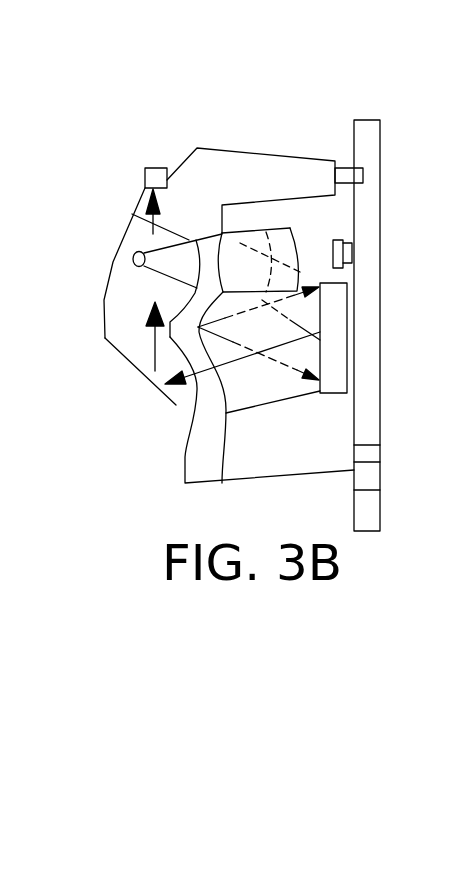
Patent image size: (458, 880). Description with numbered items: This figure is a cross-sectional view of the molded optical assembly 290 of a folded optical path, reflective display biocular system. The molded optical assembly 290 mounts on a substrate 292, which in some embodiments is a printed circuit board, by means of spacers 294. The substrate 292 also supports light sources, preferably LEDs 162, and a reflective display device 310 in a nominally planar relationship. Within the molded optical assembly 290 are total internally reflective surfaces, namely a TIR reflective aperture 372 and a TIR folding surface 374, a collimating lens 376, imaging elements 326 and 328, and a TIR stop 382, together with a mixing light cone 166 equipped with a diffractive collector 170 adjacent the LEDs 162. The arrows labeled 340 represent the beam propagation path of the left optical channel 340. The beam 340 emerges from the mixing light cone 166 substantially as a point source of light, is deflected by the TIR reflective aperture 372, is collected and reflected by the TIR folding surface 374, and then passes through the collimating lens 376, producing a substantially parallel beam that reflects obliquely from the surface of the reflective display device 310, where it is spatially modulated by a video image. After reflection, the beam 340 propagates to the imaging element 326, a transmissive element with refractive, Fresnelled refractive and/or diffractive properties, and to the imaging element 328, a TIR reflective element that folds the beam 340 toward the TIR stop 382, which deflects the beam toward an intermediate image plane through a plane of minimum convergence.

The molded optical assembly 290 is at (310, 96).
The substrate 292 is at (382, 407).
The spacers 294 is at (307, 156).
The TIR stop 382 is at (156, 168).
The left optical channel 340 is at (148, 206).
The mixing light cone 166 is at (243, 233).
The diffractive collector 170 is at (293, 224).
The TIR folding surface 374 is at (133, 233).
The TIR reflective aperture 372 is at (133, 258).
The collimating lens 376 is at (210, 292).
The LEDs 162 is at (347, 240).
The reflective display device 310 is at (348, 352).
The imaging element 326 is at (175, 395).
The imaging element 328 is at (172, 398).